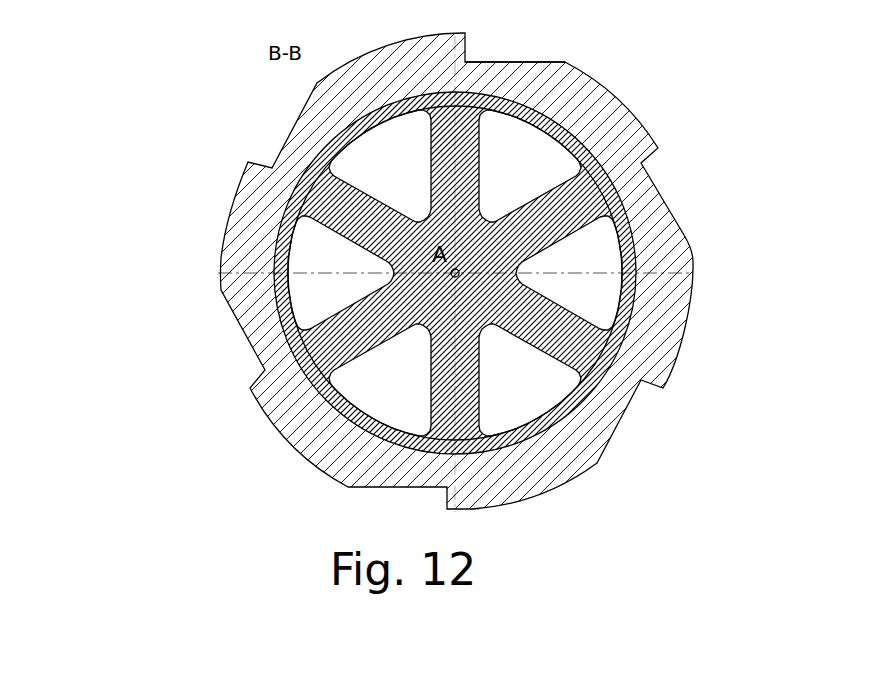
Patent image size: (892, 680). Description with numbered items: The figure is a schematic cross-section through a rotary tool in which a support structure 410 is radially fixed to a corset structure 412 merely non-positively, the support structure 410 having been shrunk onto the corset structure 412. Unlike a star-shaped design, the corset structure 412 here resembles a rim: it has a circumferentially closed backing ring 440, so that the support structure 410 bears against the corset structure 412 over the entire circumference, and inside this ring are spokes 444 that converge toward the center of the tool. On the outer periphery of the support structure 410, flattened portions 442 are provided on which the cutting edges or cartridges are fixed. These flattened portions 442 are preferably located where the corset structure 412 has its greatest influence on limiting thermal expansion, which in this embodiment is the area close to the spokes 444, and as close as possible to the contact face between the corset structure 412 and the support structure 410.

The support structure 410 is at (650, 228).
The corset structure 412 is at (420, 219).
The backing ring 440 is at (590, 143).
The flattened portion 442 is at (530, 55).
The spokes 444 is at (440, 157).